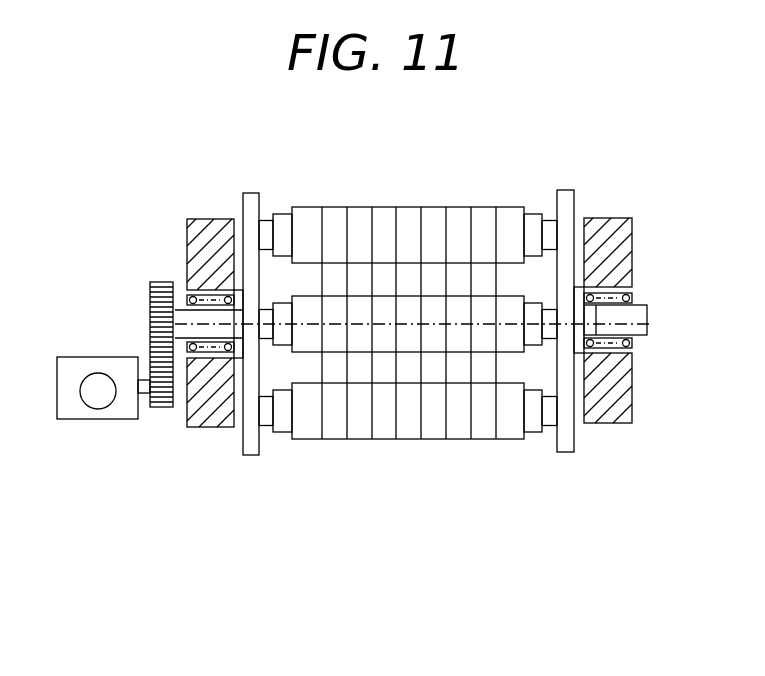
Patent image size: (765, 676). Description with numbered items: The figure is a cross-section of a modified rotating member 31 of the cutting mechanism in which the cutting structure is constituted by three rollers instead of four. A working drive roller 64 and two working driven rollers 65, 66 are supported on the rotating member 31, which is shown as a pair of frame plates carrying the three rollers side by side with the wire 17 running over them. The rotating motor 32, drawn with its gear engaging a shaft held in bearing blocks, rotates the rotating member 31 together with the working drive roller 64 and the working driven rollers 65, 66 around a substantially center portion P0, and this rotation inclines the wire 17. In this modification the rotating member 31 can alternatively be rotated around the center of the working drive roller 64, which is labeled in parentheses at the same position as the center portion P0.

The wire 17 is at (321, 277).
The rotating member 31 is at (249, 200).
The rotating motor 32 is at (93, 362).
The working drive roller 64 is at (478, 312).
The working driven roller 65 is at (512, 428).
The working driven roller 66 is at (405, 218).
The center portion P0 is at (207, 322).